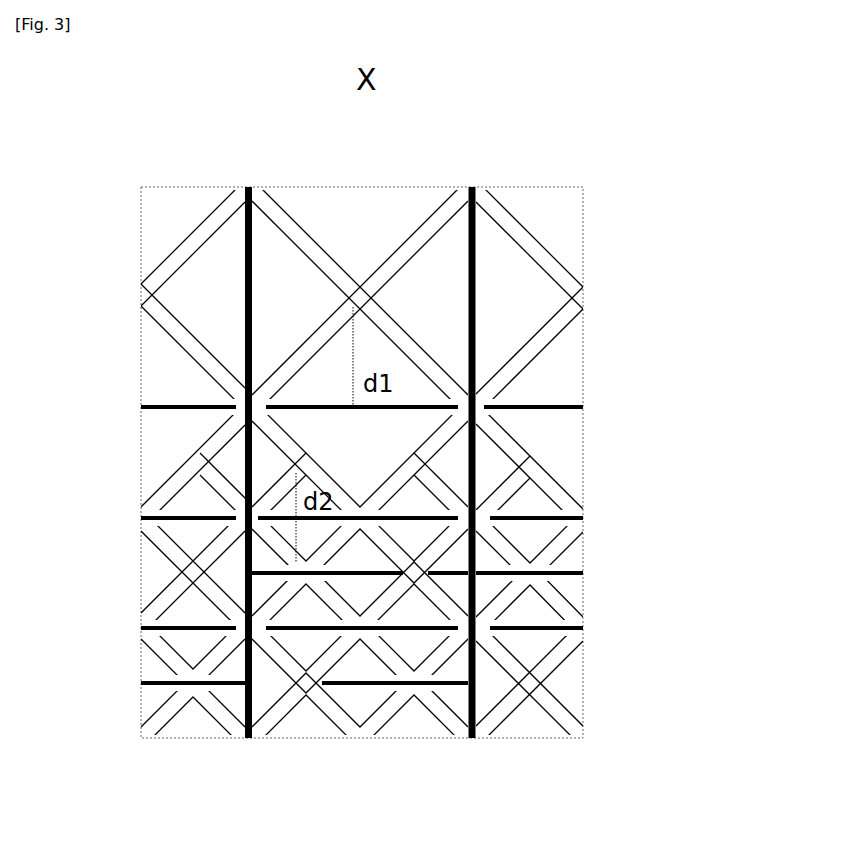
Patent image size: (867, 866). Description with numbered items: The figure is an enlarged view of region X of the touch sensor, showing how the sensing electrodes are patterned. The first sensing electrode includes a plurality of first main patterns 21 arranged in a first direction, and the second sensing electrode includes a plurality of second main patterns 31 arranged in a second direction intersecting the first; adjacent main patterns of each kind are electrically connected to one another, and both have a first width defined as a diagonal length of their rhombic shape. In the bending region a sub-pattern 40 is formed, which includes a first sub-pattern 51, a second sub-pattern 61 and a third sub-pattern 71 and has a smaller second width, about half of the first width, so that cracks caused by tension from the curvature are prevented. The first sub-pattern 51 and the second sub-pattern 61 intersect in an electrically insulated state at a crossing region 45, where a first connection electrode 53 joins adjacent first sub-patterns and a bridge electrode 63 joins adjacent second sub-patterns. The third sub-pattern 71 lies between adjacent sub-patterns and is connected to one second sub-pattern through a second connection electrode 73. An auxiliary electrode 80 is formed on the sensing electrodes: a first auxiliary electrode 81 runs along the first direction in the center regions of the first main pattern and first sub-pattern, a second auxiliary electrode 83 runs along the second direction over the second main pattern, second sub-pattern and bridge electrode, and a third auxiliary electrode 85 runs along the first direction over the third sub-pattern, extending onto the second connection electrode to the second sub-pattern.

The second main pattern 31 is at (517, 268).
The first main pattern 21 is at (557, 388).
The second sub-pattern 61 is at (497, 448).
The first sub-pattern 51 is at (508, 505).
The bridge electrode 63 is at (515, 535).
The first connection electrode 53 is at (545, 563).
The third sub-pattern 71 is at (370, 582).
The sub-pattern 40 is at (705, 440).
The crossing region 45 is at (236, 531).
The second connection electrode 73 is at (293, 578).
The third auxiliary electrode 85 is at (383, 688).
The second auxiliary electrode 83 is at (465, 700).
The first auxiliary electrode 81 is at (537, 635).
The auxiliary electrode 80 is at (558, 802).